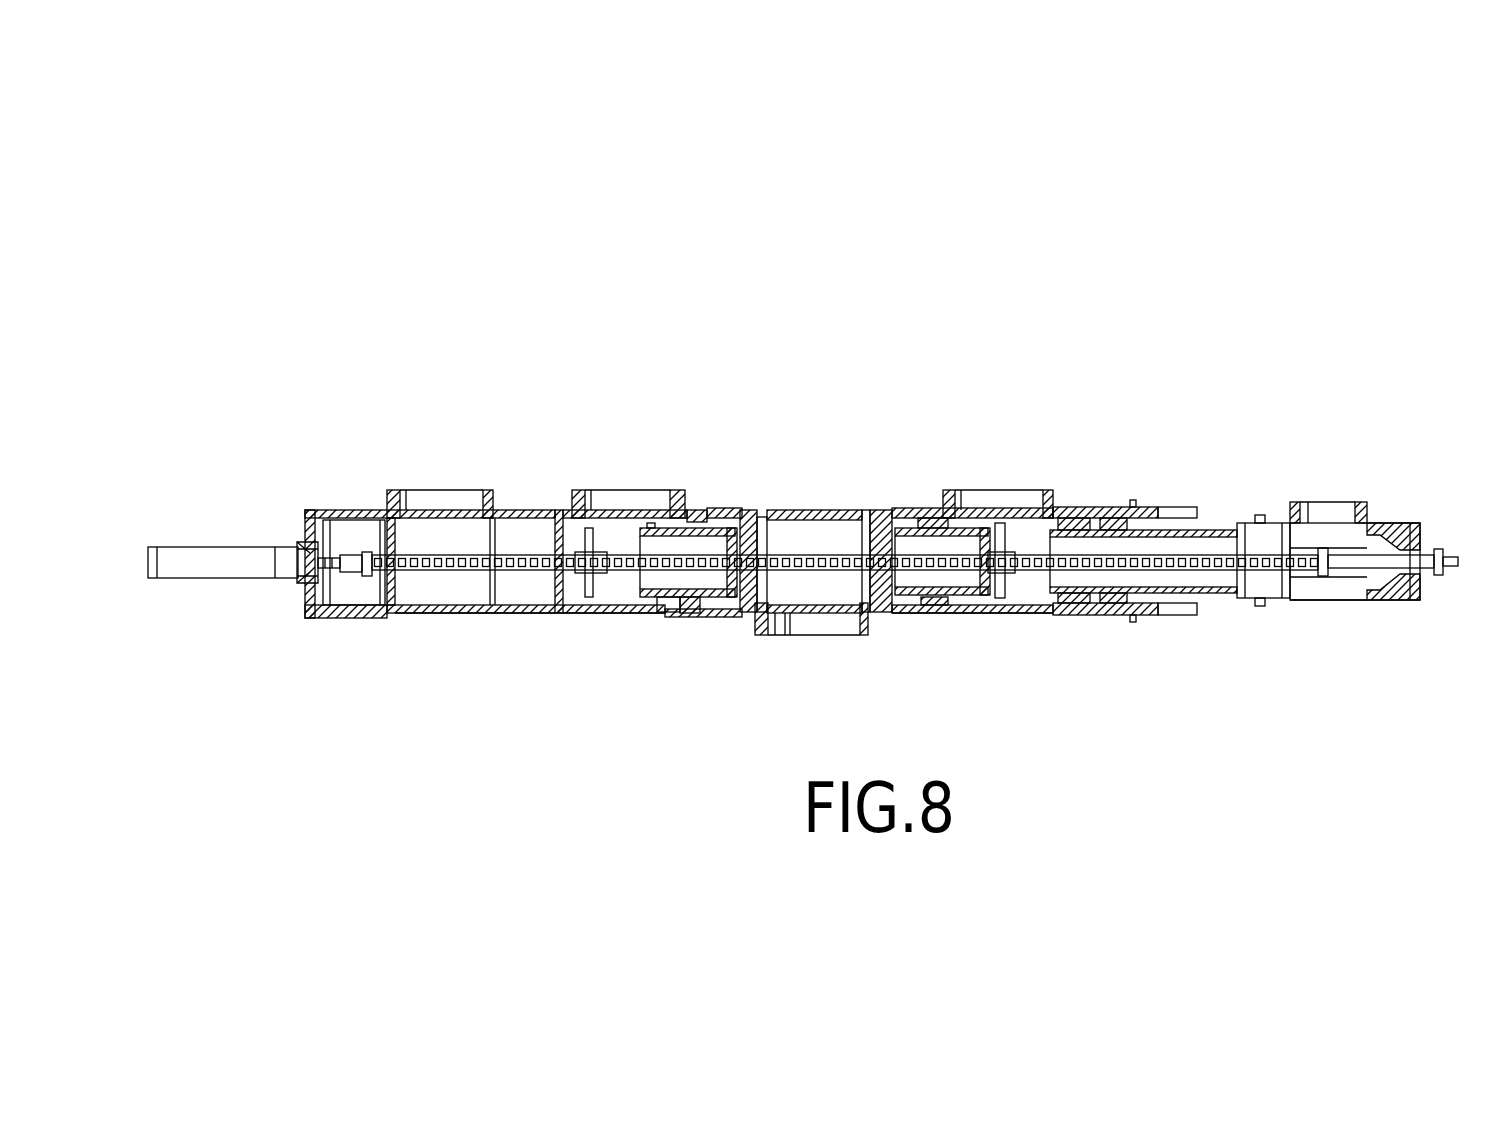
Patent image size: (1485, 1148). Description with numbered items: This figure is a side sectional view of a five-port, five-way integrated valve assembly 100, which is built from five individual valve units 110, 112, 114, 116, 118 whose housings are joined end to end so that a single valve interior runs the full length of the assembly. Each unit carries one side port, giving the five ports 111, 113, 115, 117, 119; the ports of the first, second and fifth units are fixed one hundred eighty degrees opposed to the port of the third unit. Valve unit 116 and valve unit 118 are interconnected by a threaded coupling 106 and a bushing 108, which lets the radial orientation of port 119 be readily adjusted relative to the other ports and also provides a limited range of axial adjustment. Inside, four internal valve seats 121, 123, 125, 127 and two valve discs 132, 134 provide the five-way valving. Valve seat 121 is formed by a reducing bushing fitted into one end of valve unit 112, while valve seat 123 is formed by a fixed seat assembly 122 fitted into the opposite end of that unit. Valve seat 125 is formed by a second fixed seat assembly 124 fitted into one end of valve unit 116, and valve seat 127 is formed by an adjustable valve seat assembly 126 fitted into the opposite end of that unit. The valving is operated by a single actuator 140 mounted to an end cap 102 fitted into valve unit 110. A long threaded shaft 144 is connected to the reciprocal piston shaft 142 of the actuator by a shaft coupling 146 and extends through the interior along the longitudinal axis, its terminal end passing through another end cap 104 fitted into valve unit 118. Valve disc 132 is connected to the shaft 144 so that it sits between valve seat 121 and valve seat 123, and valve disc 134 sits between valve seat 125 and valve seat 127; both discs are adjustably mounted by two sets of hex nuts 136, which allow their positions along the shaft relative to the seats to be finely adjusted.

The valve assembly 100 is at (873, 322).
The end cap 102 is at (308, 600).
The end cap 104 is at (1420, 528).
The threaded coupling 106 is at (1225, 522).
The bushing 108 is at (1278, 532).
The valve unit 110 is at (433, 624).
The port 111 is at (428, 490).
The valve unit 112 is at (627, 626).
The port 113 is at (637, 490).
The valve unit 114 is at (823, 500).
The port 115 is at (815, 636).
The valve unit 116 is at (1003, 626).
The port 117 is at (1018, 490).
The valve unit 118 is at (1328, 612).
The port 119 is at (1338, 503).
The valve seat 121 is at (562, 547).
The fixed seat assembly 122 is at (686, 528).
The valve seat 123 is at (657, 548).
The second fixed seat assembly 124 is at (925, 516).
The valve seat 125 is at (973, 547).
The adjustable valve seat assembly 126 is at (1150, 510).
The valve seat 127 is at (1088, 543).
The valve disc 132 is at (589, 530).
The valve disc 134 is at (1010, 537).
The hex nuts 136 is at (575, 575).
The actuator 140 is at (216, 538).
The reciprocal piston shaft 142 is at (347, 510).
The threaded shaft 144 is at (413, 557).
The shaft coupling 146 is at (348, 606).